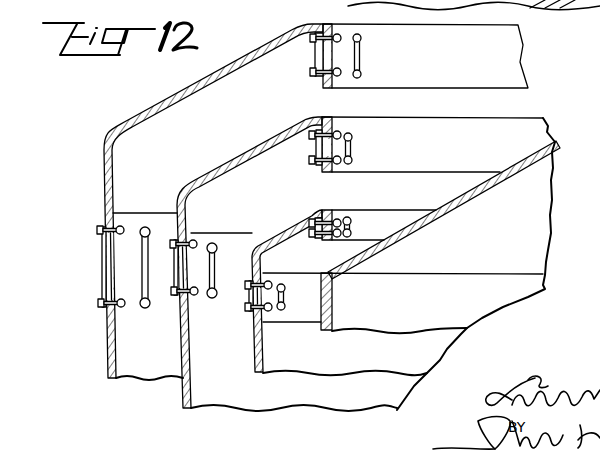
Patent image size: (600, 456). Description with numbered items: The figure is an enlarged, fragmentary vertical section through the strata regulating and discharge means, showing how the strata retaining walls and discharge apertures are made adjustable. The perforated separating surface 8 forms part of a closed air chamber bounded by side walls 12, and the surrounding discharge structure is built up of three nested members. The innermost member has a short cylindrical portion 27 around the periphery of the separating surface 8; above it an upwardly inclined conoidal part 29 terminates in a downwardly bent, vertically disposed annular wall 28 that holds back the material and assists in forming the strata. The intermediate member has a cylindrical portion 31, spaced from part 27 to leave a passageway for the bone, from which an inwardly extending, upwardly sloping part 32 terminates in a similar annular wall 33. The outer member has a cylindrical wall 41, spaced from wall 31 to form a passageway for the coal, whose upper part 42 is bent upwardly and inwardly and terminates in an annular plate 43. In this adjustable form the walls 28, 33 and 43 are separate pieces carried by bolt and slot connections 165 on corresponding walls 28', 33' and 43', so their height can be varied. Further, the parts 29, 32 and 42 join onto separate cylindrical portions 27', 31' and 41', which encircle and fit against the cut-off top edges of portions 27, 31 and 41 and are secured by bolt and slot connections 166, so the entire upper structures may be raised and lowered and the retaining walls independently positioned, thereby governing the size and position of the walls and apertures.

The separating surface 8 is at (458, 206).
The side walls 12 is at (330, 323).
The cylindrical portion 27 is at (345, 396).
The cylindrical portion 27' is at (239, 357).
The annular wall 28 is at (405, 232).
The wall 28' is at (307, 238).
The conoidal part 29 is at (295, 222).
The cylindrical portion 31 is at (270, 401).
The cylindrical portion 31' is at (165, 290).
The upwardly sloping part 32 is at (258, 138).
The annular wall 33 is at (452, 251).
The wall 33' is at (297, 155).
The cylindrical wall 41 is at (124, 366).
The cylindrical portion 41' is at (76, 285).
The upwardly and inwardly bent part 42 is at (168, 91).
The annular plate 43 is at (448, 56).
The wall 43' is at (297, 66).
The bolt and slot connections 165 is at (311, 71).
The bolt and slot connections 166 is at (210, 258).